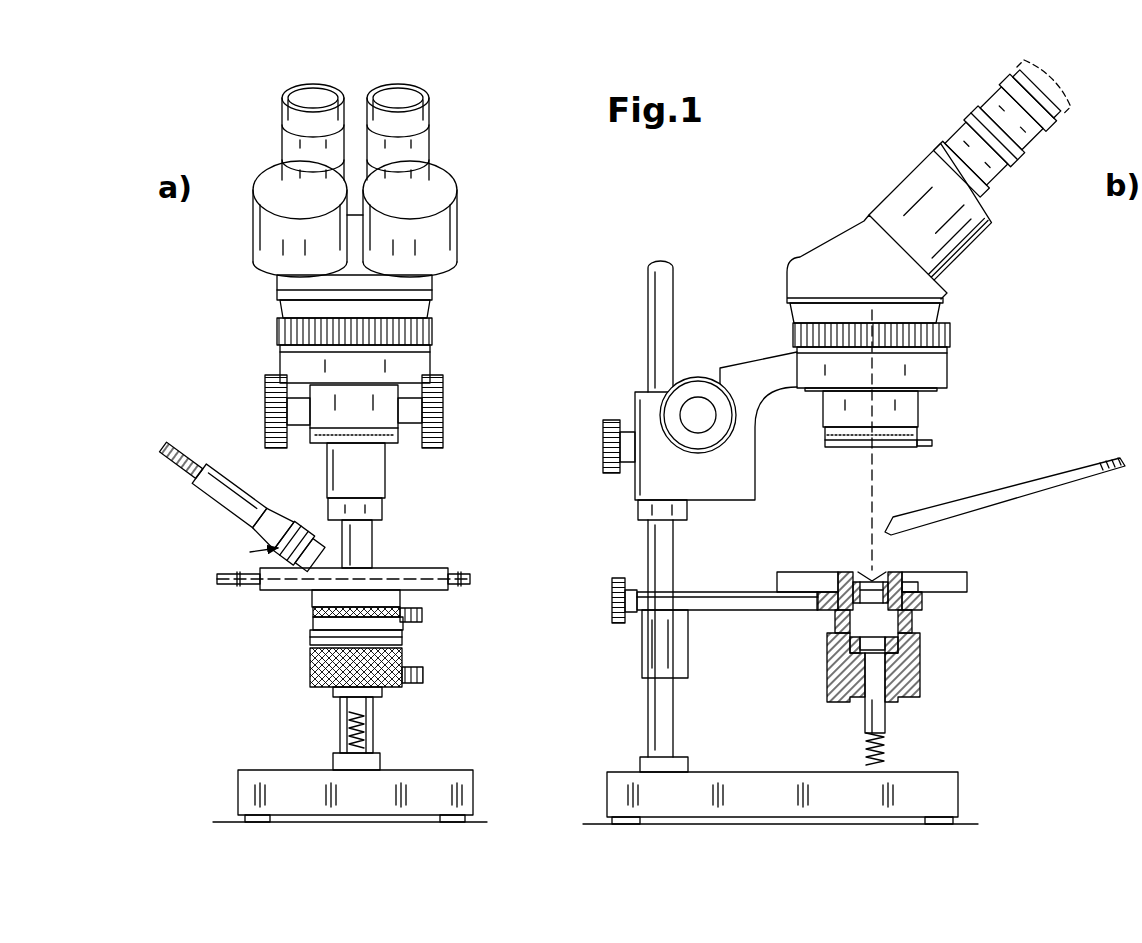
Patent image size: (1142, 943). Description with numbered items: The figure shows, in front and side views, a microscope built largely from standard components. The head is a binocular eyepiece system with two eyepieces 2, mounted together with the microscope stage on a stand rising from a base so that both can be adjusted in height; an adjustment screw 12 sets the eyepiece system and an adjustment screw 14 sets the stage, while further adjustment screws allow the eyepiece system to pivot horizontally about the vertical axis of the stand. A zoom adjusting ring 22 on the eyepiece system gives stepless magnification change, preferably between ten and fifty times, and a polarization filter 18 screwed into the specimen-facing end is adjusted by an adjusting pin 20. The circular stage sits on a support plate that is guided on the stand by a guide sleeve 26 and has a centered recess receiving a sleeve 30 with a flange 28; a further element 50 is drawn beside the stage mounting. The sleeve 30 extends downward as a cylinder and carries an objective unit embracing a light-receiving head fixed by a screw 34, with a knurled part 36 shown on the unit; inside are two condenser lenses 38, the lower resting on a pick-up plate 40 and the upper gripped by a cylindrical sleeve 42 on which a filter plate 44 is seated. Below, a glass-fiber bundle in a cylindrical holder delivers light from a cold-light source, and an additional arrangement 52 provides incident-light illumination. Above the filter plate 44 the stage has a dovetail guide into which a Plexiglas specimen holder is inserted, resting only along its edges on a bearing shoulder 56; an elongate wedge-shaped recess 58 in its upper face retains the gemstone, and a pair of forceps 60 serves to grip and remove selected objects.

The eyepieces 2 is at (412, 190).
The adjustment screw 12 is at (603, 440).
The adjustment screw 14 is at (613, 615).
The polarization filter 18 is at (917, 427).
The adjusting pin 20 is at (937, 443).
The zoom adjusting ring 22 is at (950, 333).
The guide sleeve 26 is at (655, 655).
The flange 28 is at (922, 603).
The sleeve 30 is at (832, 615).
The screw 34 is at (426, 677).
The knurled nut 36 is at (318, 677).
The condenser lenses 38 is at (900, 640).
The pick-up plate 40 is at (920, 663).
The cylindrical sleeve 42 is at (910, 583).
The filter plate 44 is at (888, 582).
The screw 50 is at (424, 615).
The arrangement for incident-light illumination 52 is at (186, 496).
The bearing shoulder 56 is at (838, 588).
The elongate recess 58 is at (866, 565).
The pair of forceps 60 is at (930, 523).